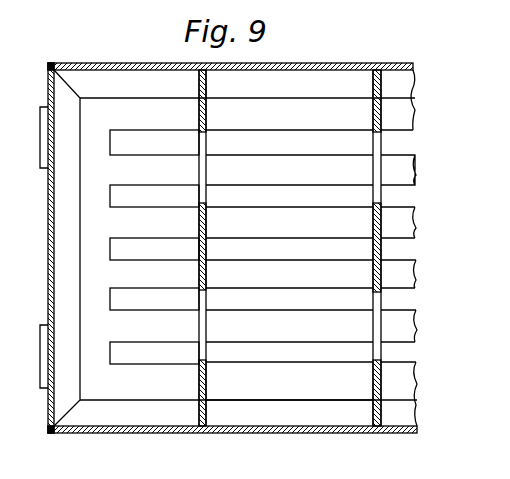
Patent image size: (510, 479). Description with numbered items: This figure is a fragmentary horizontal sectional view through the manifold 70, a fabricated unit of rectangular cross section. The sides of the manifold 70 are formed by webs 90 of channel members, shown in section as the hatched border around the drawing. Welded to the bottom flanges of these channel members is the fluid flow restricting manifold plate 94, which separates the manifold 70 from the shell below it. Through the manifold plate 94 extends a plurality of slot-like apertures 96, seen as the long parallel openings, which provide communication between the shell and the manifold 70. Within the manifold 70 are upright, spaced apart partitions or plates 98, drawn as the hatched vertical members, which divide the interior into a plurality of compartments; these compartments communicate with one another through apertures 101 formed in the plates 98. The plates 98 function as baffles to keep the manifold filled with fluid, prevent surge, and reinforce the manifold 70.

The webs 90 is at (322, 64).
The slot-like apertures 96 is at (285, 140).
The apertures 101 is at (206, 172).
The partitions or plates 98 is at (199, 223).
The manifold 70 is at (58, 433).
The fluid flow restricting manifold plate 94 is at (355, 400).